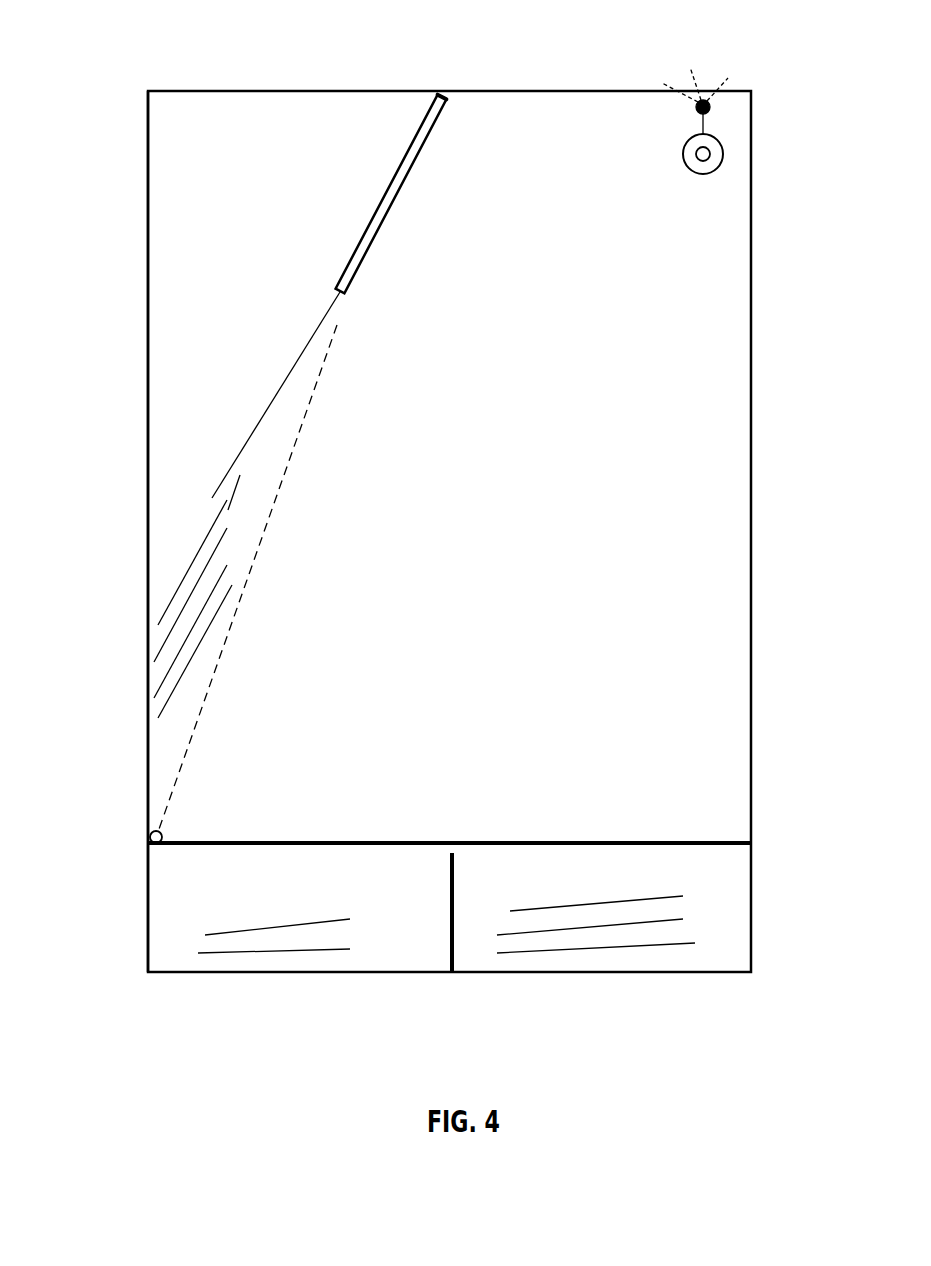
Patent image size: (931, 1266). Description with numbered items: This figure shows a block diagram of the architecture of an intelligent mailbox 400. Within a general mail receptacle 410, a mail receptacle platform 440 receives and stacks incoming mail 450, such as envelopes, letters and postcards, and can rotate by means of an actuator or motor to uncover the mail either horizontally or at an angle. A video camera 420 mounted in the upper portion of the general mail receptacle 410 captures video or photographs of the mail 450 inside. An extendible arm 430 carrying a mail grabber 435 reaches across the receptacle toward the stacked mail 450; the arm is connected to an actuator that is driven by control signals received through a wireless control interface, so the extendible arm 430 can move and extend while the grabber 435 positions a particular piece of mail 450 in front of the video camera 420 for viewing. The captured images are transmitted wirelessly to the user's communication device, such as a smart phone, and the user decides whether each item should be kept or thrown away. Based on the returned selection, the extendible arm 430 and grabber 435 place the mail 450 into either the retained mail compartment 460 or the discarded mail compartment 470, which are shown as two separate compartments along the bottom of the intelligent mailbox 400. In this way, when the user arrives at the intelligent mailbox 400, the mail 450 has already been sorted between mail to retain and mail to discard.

The intelligent mailbox 400 is at (494, 493).
The general mail receptacle 410 is at (148, 202).
The video camera 420 is at (728, 147).
The extendible arm 430 is at (422, 160).
The mail grabber 435 is at (212, 487).
The mail receptacle platform 440 is at (215, 675).
The mail 450 is at (185, 565).
The retained mail compartment 460 is at (184, 920).
The discarded mail compartment 470 is at (723, 912).